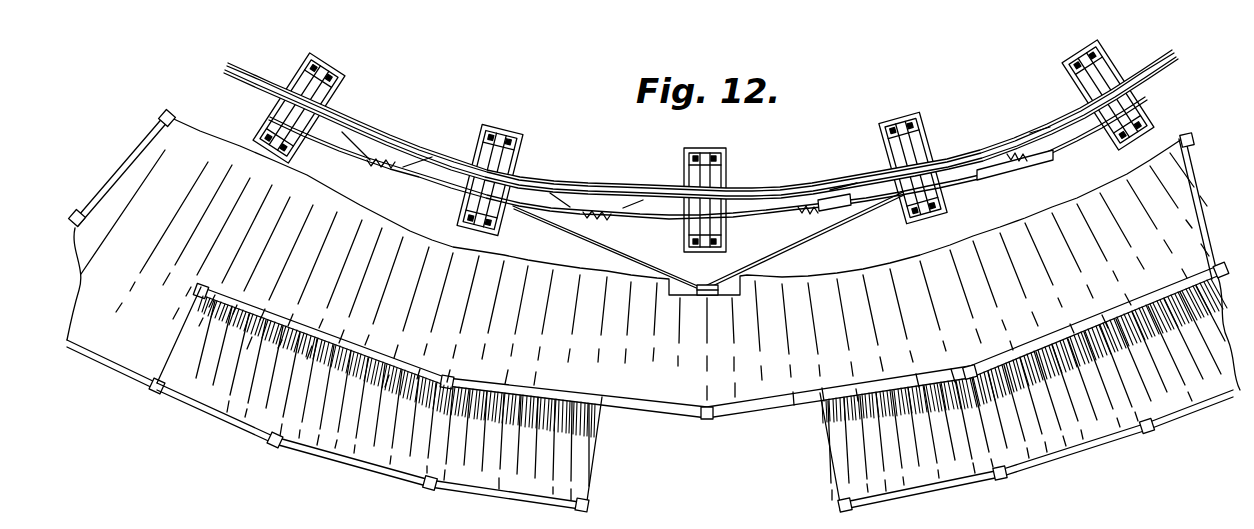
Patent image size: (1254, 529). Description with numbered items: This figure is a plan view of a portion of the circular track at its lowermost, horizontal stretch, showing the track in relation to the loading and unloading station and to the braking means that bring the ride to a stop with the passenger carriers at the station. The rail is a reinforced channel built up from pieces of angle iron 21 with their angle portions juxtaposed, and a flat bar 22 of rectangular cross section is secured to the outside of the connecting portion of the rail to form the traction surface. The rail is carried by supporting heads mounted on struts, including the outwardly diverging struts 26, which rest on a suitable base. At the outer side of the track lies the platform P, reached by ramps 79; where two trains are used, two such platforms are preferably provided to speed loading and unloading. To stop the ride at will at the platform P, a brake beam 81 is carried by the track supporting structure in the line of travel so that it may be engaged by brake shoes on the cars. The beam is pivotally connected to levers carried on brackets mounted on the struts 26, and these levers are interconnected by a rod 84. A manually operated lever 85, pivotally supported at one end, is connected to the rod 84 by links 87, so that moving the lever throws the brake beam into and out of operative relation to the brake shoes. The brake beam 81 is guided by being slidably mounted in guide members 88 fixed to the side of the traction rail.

The angle iron piece 21 is at (807, 187).
The flat bar 22 is at (748, 193).
The strut 26 is at (903, 158).
The ramp 79 is at (590, 488).
The brake beam 81 is at (747, 220).
The rod 84 is at (972, 179).
The manually operated lever 85 is at (712, 297).
The link 87 is at (621, 253).
The guide member 88 is at (578, 200).
The platform P is at (653, 264).